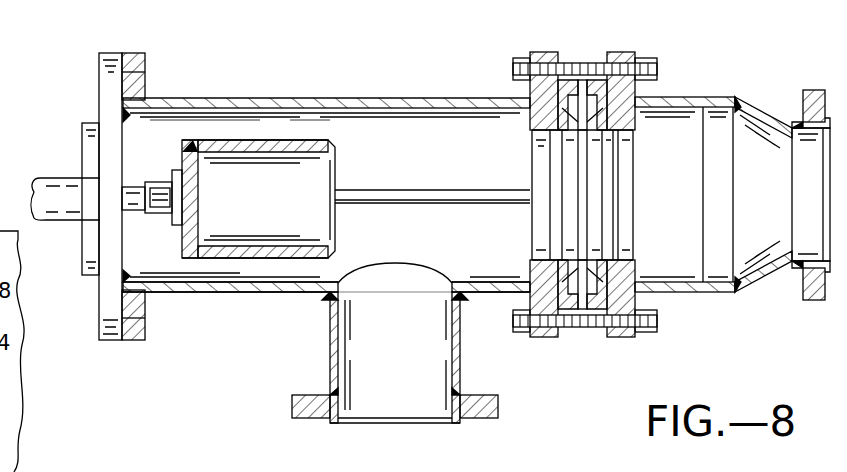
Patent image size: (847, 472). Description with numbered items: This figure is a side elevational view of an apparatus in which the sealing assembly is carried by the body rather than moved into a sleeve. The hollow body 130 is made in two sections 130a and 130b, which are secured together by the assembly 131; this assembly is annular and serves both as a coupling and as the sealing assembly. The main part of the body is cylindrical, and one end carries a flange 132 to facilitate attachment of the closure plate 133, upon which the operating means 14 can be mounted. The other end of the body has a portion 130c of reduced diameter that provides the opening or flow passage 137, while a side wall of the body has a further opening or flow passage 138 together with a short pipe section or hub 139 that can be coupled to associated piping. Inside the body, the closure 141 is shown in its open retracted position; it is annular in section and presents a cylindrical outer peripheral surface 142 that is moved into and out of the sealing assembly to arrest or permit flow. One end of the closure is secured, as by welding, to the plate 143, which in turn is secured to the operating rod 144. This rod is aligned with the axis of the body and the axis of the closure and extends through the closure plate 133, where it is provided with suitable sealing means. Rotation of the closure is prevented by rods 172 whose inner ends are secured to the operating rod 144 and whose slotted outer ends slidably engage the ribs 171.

The operating means 14 is at (60, 176).
The hollow body 130 is at (411, 88).
The body section 130a is at (336, 97).
The body section 130b is at (672, 97).
The portion of reduced diameter 130c is at (766, 108).
The assembly 131 is at (626, 46).
The flange 132 is at (138, 54).
The closure plate 133 is at (98, 74).
The opening or flow passage 137 is at (806, 232).
The opening or flow passage 138 is at (383, 278).
The short pipe section or hub 139 is at (326, 354).
The closure 141 is at (316, 176).
The cylindrical outer peripheral surface 142 is at (274, 146).
The plate 143 is at (190, 210).
The operating rod 144 is at (135, 184).
The ribs 171 is at (433, 196).
The rods 172 is at (168, 212).